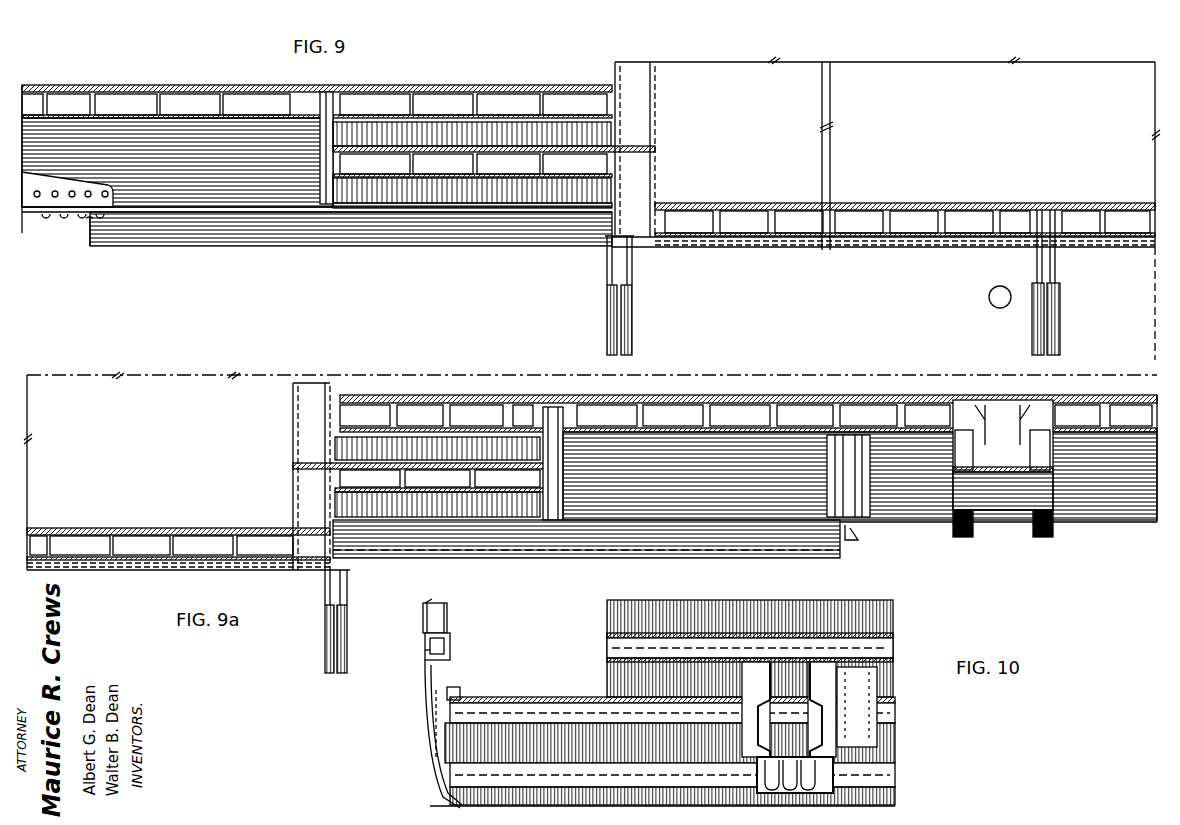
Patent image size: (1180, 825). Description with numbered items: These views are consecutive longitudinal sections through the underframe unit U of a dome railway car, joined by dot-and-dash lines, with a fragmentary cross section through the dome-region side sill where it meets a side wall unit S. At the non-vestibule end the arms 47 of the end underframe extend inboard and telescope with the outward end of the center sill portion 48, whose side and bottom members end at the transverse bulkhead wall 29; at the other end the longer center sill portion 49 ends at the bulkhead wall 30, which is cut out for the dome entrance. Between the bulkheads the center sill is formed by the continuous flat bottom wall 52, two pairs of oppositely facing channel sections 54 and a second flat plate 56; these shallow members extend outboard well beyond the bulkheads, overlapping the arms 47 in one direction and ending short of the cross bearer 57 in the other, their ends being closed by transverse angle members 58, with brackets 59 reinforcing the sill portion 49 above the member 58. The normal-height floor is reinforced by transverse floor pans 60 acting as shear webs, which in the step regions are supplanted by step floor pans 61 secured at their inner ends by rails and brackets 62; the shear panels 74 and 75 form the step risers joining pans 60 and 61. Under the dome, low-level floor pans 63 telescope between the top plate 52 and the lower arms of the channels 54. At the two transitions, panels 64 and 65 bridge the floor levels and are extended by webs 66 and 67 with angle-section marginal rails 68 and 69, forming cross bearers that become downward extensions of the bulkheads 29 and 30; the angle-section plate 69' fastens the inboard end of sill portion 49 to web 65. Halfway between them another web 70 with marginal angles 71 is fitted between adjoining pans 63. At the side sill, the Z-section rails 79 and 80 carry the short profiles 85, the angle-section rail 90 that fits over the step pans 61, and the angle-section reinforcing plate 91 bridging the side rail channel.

In FIG. 9, the transverse bulkhead wall 29 is at (633, 72).
In FIG. 9A, the transverse bulkhead wall 30 is at (313, 392).
In FIG. 10, the transverse bulkhead wall 30 is at (890, 610).
In FIG. 9, the arm of end underframe 47 is at (33, 200).
In FIG. 9, the center sill portion 48 is at (133, 205).
In FIG. 9A, the center sill portion 49 is at (1103, 500).
In FIG. 10, the flat bottom wall 52 is at (870, 772).
In FIG. 9A, the outer channel section 54 is at (568, 545).
In FIG. 9A, the flat plate 56 is at (525, 560).
In FIG. 10, the flat plate 56 is at (870, 782).
In FIG. 9A, the cross bearer 57 is at (1005, 505).
In FIG. 9, the transverse angle member 58 is at (90, 236).
In FIG. 9A, the transverse angle member 58 is at (850, 540).
In FIG. 9A, the bracket 59 is at (850, 445).
In FIG. 9, the floor pan 60 is at (221, 107).
In FIG. 9A, the floor pan 60 is at (773, 410).
In FIG. 10, the floor pan 60 is at (893, 652).
In FIG. 9, the step floor pan 61 is at (530, 170).
In FIG. 9A, the step floor pan 61 is at (420, 468).
In FIG. 10, the step floor pan 61 is at (550, 705).
In FIG. 10, the rail and bracket 62 is at (683, 683).
In FIG. 9A, the low-level floor pan 63 is at (190, 528).
In FIG. 10, the low-level floor pan 63 is at (450, 795).
In FIG. 9, the transition panel 64 is at (622, 182).
In FIG. 9A, the transition panel 65 is at (322, 515).
In FIG. 10, the transition panel 65 is at (882, 732).
In FIG. 9, the web 66 is at (612, 262).
In FIG. 9A, the web 67 is at (325, 585).
In FIG. 10, the web 67 is at (895, 797).
In FIG. 9, the angle-section marginal rail 68 is at (625, 304).
In FIG. 9A, the angle-section marginal rail 69 is at (349, 639).
In FIG. 10, the angle-section plate 69' is at (884, 705).
In FIG. 9, the web 70 is at (1052, 264).
In FIG. 9, the marginal reinforcing angle 71 is at (1052, 313).
In FIG. 9, the shear panel 74 is at (303, 140).
In FIG. 9A, the shear panel 75 is at (561, 425).
In FIG. 10, the Z-section rail 79 is at (447, 616).
In FIG. 10, the Z-section rail 80 is at (424, 655).
In FIG. 10, the short profile 85 is at (430, 688).
In FIG. 10, the angle-section rail 90 is at (460, 690).
In FIG. 10, the angle-section reinforcing plate 91 is at (450, 648).
In FIG. 10, the side wall unit S is at (427, 735).
In FIG. 9, the underframe unit U is at (1000, 297).
In FIG. 10, the underframe unit U is at (897, 710).